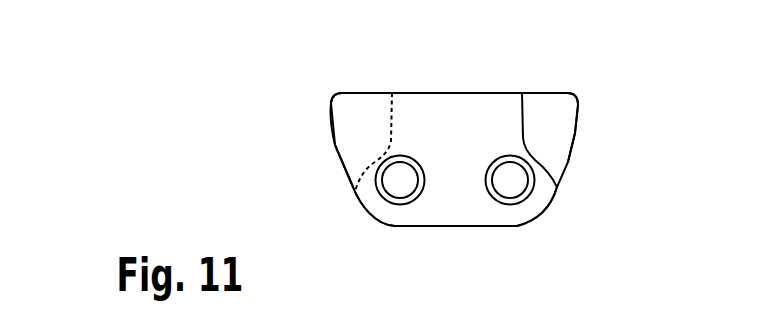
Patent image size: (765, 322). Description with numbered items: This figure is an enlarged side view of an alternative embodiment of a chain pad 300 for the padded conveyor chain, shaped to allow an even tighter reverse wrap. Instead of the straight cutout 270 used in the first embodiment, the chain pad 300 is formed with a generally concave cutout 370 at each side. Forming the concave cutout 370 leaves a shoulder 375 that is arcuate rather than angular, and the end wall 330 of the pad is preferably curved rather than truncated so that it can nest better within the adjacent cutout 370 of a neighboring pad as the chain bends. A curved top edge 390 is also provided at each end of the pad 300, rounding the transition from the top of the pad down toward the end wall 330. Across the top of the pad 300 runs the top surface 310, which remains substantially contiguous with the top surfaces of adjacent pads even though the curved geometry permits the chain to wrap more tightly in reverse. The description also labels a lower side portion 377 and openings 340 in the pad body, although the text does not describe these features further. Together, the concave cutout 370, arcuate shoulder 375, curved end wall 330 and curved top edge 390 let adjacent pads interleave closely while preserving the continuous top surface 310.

The straight cutout 270 is at (53, 36).
The chain pad 300 is at (480, 108).
The top surface 310 is at (452, 93).
The end wall 330 is at (332, 128).
The fastener holes 340 is at (445, 149).
The concave cutout 370 is at (367, 118).
The shoulder 375 is at (385, 143).
The lower side portion 377 is at (350, 148).
The curved top edge 390 is at (337, 92).